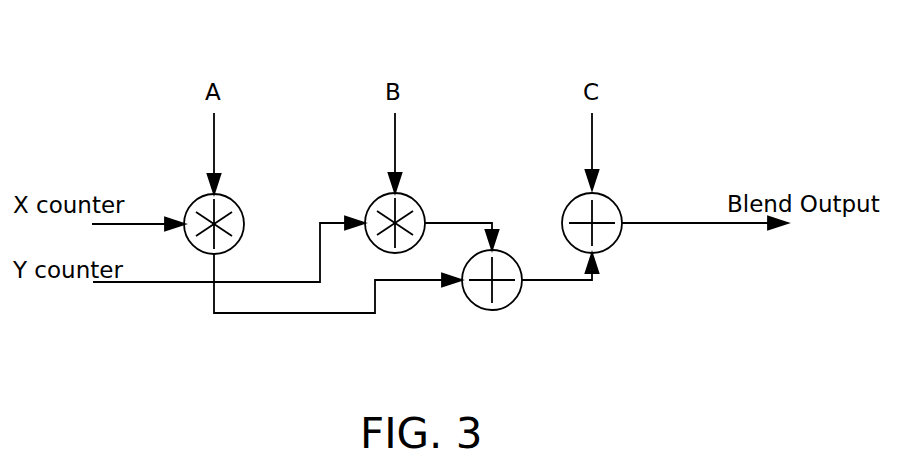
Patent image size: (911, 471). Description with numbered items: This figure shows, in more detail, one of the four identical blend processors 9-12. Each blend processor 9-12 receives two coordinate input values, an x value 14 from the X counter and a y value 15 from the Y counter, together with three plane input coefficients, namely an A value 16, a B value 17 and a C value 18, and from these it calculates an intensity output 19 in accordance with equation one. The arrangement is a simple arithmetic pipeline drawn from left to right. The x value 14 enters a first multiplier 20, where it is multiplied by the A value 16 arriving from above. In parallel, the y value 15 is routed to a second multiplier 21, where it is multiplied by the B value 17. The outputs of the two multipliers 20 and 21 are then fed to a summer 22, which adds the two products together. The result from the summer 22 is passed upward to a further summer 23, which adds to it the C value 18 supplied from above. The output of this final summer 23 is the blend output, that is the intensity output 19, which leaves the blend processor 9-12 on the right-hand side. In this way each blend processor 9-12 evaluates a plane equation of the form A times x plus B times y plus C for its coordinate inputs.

The blend processor 9-12 is at (104, 95).
The x value 14 is at (92, 224).
The y value 15 is at (100, 282).
The A value 16 is at (214, 153).
The B value 17 is at (395, 160).
The C value 18 is at (592, 150).
The intensity output 19 is at (641, 223).
The multiplier 20 is at (243, 223).
The multiplier 21 is at (414, 200).
The summer 22 is at (505, 307).
The summer 23 is at (618, 200).